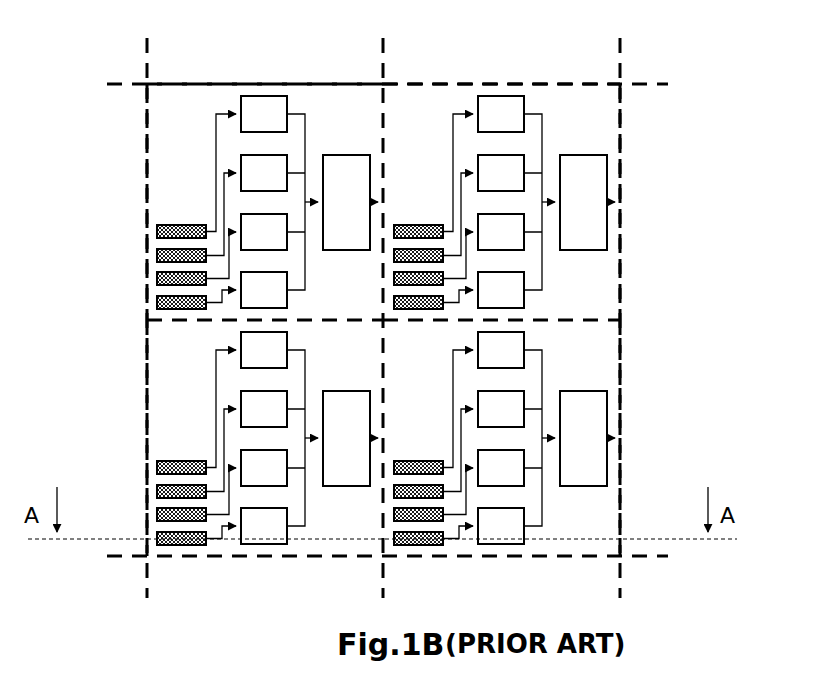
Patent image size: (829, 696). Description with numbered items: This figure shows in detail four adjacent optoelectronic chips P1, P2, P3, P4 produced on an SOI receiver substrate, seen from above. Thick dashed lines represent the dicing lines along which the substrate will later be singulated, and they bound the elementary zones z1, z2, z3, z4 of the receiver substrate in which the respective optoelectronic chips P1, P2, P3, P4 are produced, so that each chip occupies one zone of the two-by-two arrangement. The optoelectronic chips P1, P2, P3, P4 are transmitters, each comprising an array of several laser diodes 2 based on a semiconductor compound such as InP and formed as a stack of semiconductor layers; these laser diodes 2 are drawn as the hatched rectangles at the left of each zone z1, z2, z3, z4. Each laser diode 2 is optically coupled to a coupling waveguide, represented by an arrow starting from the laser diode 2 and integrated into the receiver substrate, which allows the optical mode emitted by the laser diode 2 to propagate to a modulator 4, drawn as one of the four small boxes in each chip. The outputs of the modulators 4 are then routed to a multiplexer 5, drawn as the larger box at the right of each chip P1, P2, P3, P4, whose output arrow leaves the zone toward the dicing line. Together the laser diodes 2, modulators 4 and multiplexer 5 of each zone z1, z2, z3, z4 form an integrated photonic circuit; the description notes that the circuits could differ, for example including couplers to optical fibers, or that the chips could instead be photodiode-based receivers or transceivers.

The laser diodes 2 is at (152, 302).
The modulator 4 is at (263, 89).
The multiplexer 5 is at (347, 149).
The optoelectronic chip P1 is at (155, 118).
The optoelectronic chip P2 is at (605, 102).
The optoelectronic chip P3 is at (605, 332).
The optoelectronic chip P4 is at (160, 352).
The elementary zone z1 is at (160, 142).
The elementary zone z2 is at (602, 127).
The elementary zone z3 is at (602, 363).
The elementary zone z4 is at (162, 382).